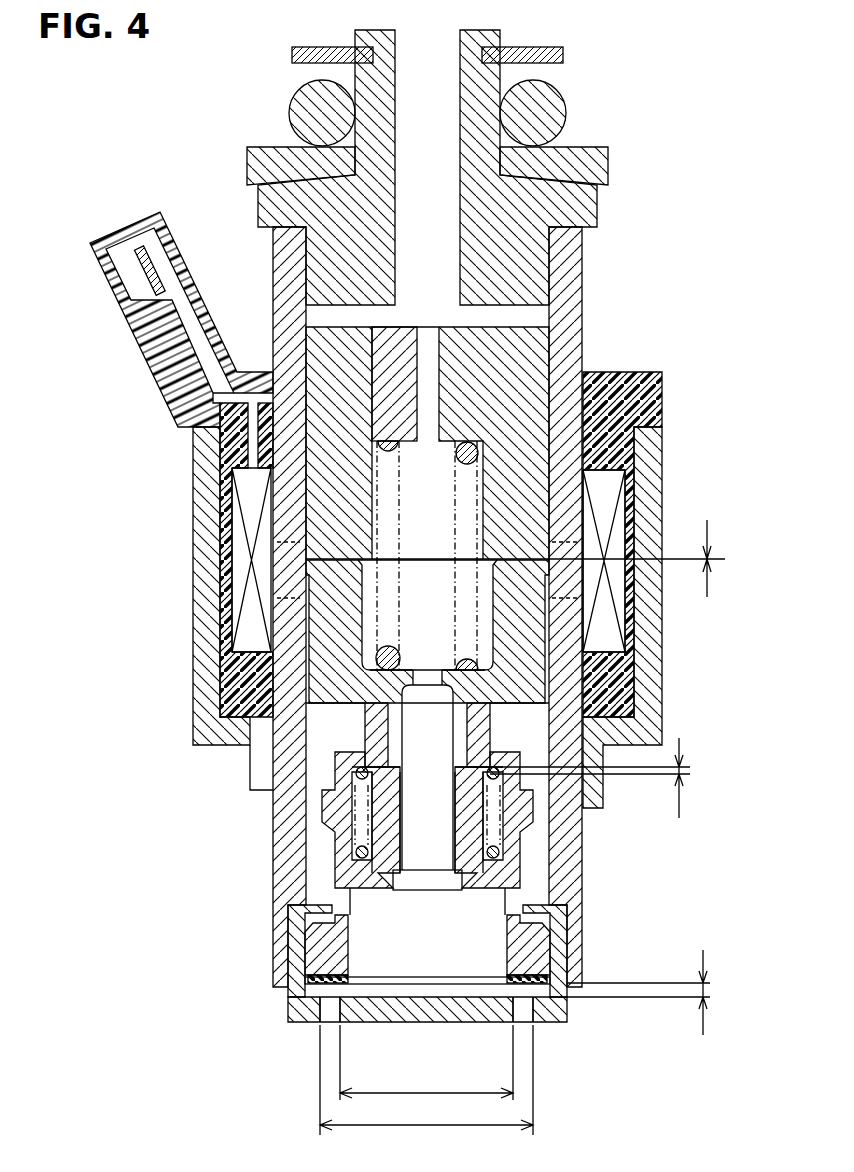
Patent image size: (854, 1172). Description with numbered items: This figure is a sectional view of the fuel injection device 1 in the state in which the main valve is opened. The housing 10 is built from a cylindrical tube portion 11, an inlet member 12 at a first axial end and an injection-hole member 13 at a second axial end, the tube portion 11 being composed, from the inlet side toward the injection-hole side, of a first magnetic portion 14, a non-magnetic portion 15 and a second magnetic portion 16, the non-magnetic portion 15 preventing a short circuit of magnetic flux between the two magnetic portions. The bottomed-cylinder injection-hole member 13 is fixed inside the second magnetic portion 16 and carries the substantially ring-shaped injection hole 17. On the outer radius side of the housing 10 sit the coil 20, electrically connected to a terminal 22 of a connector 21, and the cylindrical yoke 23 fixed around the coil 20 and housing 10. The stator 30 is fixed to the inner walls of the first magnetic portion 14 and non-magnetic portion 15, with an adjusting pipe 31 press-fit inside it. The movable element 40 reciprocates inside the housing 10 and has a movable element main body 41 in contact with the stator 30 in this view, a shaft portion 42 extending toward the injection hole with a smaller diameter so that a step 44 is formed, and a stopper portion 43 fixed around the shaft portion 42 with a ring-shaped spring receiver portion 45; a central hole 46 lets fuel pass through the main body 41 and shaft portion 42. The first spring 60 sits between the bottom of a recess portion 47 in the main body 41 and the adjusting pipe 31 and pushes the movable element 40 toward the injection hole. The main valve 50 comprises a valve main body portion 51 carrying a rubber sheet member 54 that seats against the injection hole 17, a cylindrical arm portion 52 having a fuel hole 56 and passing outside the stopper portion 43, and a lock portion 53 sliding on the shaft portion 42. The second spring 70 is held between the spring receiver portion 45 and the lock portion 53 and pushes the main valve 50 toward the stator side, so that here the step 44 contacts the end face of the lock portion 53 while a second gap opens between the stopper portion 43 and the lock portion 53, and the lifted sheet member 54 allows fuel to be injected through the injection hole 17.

The fuel injection device 1 is at (604, 75).
The housing 10 is at (273, 285).
The tube portion 11 is at (110, 481).
The inlet member 12 is at (577, 210).
The injection-hole member 13 is at (430, 1008).
The first magnetic portion 14 is at (233, 490).
The non-magnetic portion 15 is at (235, 568).
The second magnetic portion 16 is at (235, 620).
The injection hole 17 is at (522, 1010).
The coil 20 is at (222, 640).
The connector 21 is at (158, 345).
The terminal 22 is at (137, 250).
The yoke 23 is at (200, 698).
The stator 30 is at (540, 355).
The adjusting pipe 31 is at (465, 352).
The movable element 40 is at (542, 720).
The movable element main body 41 is at (500, 668).
The shaft portion 42 is at (348, 773).
The stopper portion 43 is at (335, 832).
The step 44 is at (545, 733).
The spring receiver portion 45 is at (352, 870).
The hole 46 is at (548, 690).
The recess portion 47 is at (470, 624).
The main valve 50 is at (520, 958).
The valve main body portion 51 is at (300, 935).
The arm portion 52 is at (535, 833).
The lock portion 53 is at (366, 735).
The sheet member 54 is at (318, 988).
The fuel hole 56 is at (520, 910).
The first spring 60 is at (480, 486).
The second spring 70 is at (335, 842).